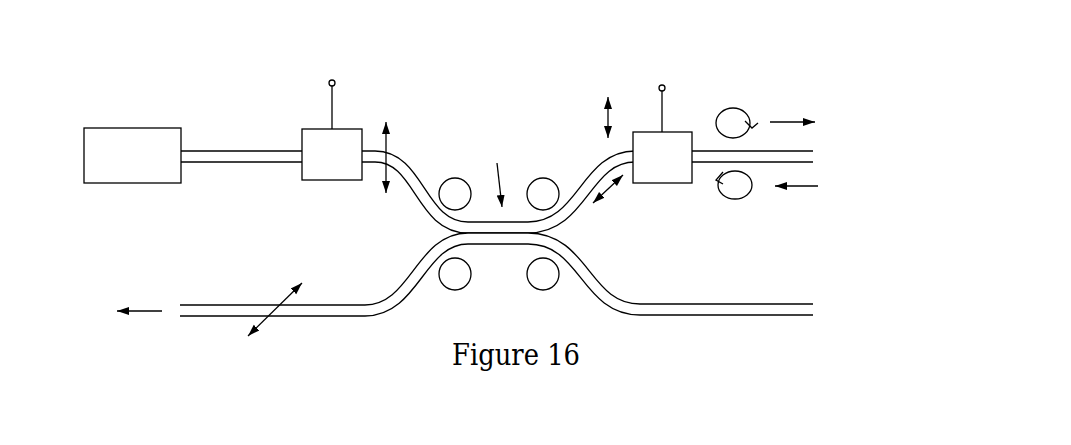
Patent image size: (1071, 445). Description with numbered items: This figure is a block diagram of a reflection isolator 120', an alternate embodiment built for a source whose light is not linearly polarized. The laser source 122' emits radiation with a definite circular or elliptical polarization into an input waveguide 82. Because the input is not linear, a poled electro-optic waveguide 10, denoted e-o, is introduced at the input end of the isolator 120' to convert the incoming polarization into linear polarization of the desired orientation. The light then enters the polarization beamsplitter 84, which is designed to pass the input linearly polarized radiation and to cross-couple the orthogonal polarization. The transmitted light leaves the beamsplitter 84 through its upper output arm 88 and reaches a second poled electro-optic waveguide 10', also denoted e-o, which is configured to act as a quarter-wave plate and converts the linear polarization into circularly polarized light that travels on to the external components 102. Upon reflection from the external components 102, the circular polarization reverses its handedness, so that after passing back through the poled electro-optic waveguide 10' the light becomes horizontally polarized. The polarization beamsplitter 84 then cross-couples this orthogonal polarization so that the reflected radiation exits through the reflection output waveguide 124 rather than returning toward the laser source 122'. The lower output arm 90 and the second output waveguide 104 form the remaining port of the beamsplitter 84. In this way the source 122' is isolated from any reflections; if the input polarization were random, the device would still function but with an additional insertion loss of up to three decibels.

The reflection isolator 120' is at (530, 180).
The poled electro-optic waveguide 10 is at (373, 120).
The upper output arm of polarization beamsplitter 88 is at (588, 155).
The poled electro-optic waveguide 10' is at (711, 111).
The external components 102 is at (805, 160).
The input waveguide 82 is at (200, 162).
The laser source 122' is at (132, 187).
The reflection output waveguide 124 is at (213, 319).
The polarization beamsplitter 84 is at (497, 238).
The lower output arm of polarization beamsplitter 90 is at (627, 305).
The second output waveguide 104 is at (813, 312).